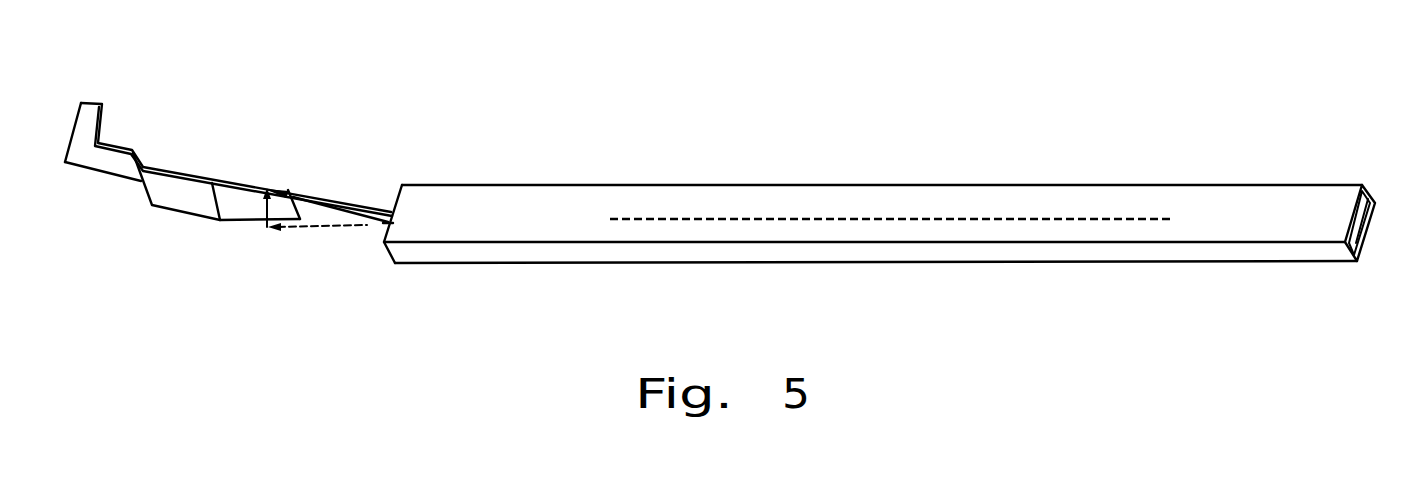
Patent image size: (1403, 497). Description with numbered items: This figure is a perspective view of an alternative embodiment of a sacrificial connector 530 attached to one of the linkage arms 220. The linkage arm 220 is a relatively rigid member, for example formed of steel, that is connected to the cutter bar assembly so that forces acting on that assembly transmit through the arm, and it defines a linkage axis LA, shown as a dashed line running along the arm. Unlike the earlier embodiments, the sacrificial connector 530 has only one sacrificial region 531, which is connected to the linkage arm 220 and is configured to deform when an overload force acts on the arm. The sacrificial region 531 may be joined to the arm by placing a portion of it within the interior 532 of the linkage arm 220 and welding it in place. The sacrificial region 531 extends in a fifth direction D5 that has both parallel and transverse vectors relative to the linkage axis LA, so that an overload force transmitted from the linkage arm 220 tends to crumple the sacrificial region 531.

The sacrificial connector 530 is at (209, 146).
The sacrificial region 531 is at (353, 202).
The interior of the linkage arm 532 is at (1358, 262).
The linkage arm 220 is at (879, 220).
The fifth direction D5 is at (315, 185).
The linkage axis LA is at (955, 218).